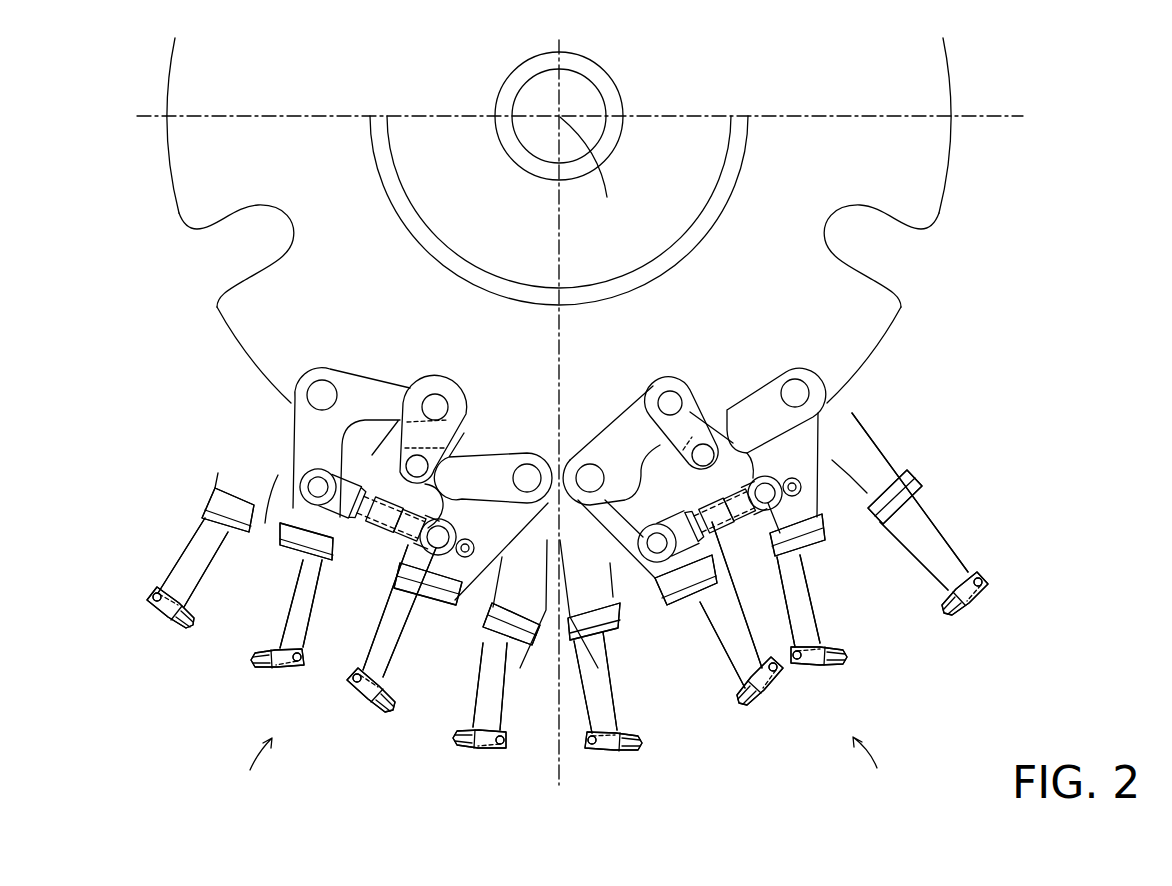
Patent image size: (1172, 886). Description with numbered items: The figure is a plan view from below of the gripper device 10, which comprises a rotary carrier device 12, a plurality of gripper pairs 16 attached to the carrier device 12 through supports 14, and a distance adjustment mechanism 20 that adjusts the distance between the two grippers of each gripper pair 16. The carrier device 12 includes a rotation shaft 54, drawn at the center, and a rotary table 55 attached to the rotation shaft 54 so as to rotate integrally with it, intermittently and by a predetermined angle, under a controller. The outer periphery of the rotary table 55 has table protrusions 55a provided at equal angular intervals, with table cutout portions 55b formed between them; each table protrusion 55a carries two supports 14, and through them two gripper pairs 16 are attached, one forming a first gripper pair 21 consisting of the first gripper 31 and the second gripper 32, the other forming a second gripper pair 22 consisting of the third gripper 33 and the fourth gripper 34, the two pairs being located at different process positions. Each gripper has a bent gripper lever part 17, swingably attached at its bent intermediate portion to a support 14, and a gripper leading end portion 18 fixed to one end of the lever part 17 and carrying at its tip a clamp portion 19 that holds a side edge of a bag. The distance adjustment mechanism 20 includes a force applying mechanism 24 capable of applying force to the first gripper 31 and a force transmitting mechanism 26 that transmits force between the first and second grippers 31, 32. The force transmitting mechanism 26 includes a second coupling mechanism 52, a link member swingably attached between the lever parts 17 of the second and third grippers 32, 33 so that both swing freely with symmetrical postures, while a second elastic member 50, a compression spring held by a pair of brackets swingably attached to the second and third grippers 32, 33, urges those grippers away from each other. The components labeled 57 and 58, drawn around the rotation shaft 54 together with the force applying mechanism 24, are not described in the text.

The gripper device 10 is at (1046, 285).
The rotary carrier device 12 is at (571, 319).
The support 14 is at (320, 388).
The gripper pair 16 is at (533, 609).
The gripper lever part 17 is at (218, 478).
The gripper leading end portion 18 is at (200, 528).
The clamp portion 19 is at (180, 635).
The distance adjustment mechanism 20 is at (541, 521).
The first gripper pair 21 is at (430, 639).
The second gripper pair 22 is at (647, 608).
The force applying mechanism 24 is at (585, 210).
The force transmitting mechanism 26 is at (585, 414).
The first gripper 31 is at (180, 570).
The second gripper 32 is at (497, 590).
The third gripper 33 is at (388, 640).
The fourth gripper 34 is at (940, 557).
The second elastic member 50 is at (373, 535).
The second coupling mechanism 52 is at (436, 437).
The rotation shaft 54 is at (584, 92).
The rotary table 55 is at (571, 319).
The table protrusion 55a is at (190, 176).
The table cutout portion 55b is at (288, 228).
The support member 57 is at (585, 210).
The ring portion 58 is at (697, 237).